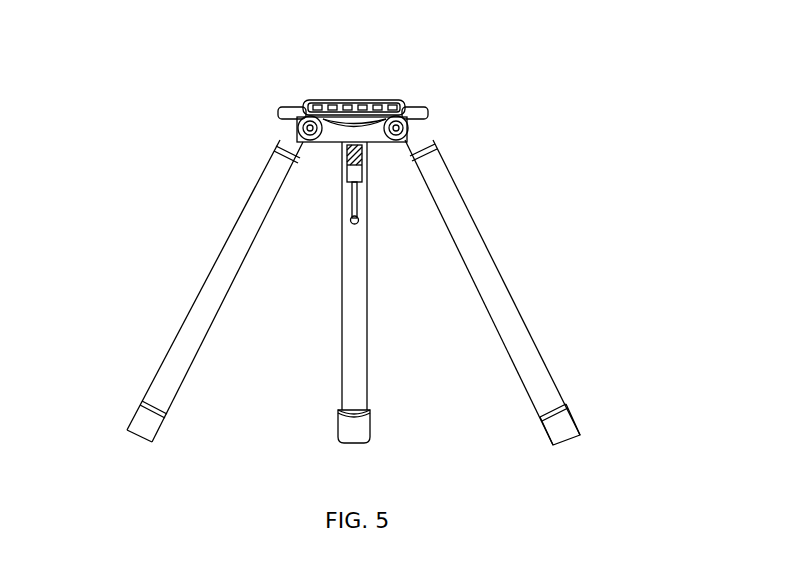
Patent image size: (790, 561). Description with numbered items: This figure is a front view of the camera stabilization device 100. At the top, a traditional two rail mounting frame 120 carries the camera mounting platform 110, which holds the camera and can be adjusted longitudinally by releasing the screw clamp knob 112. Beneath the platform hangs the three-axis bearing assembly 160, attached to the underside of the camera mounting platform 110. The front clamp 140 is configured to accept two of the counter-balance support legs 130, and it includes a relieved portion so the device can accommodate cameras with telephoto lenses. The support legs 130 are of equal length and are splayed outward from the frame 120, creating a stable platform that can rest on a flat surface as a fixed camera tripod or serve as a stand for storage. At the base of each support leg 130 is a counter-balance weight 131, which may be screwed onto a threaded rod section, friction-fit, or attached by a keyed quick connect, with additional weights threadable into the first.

The camera stabilization device 100 is at (182, 253).
The camera mounting platform 110 is at (432, 102).
The screw clamp knob 112 is at (330, 103).
The two rail mounting frame 120 is at (412, 130).
The counter-balance support leg 130 is at (515, 288).
The counter-balance weight 131 is at (578, 415).
The front clamp 140 is at (273, 133).
The three-axis bearing assembly 160 is at (337, 190).